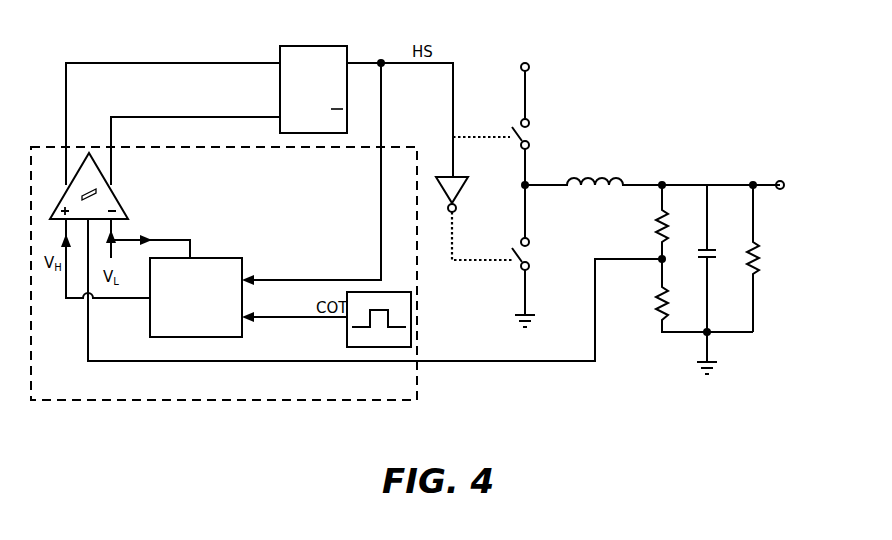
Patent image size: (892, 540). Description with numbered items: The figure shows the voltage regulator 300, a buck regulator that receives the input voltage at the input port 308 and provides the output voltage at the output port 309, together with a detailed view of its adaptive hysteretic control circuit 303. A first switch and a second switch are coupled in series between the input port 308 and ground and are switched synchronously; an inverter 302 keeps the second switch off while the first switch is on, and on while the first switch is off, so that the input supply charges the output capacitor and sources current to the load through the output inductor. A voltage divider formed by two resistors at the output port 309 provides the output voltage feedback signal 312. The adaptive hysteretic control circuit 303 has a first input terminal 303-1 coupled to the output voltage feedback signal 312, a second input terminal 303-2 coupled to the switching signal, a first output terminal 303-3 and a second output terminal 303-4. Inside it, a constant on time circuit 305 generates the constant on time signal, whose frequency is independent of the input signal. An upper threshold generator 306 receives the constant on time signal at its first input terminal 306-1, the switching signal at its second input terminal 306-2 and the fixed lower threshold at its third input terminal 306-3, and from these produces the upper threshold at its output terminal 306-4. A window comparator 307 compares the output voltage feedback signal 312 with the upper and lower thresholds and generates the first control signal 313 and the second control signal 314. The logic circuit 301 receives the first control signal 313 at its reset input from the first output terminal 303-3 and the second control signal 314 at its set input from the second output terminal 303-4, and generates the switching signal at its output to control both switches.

The voltage regulator 300 is at (668, 84).
The logic circuit 301 is at (288, 46).
The inverter 302 is at (462, 194).
The adaptive hysteretic control circuit 303 is at (370, 400).
The first input terminal 303-1 is at (275, 290).
The second input terminal 303-2 is at (334, 174).
The first output terminal 303-3 is at (195, 151).
The second output terminal 303-4 is at (153, 124).
The constant on time circuit 305 is at (383, 292).
The upper threshold generator 306 is at (216, 258).
The first input terminal 306-1 is at (294, 310).
The second input terminal 306-2 is at (319, 271).
The third input terminal 306-3 is at (151, 239).
The output terminal 306-4 is at (105, 259).
The window comparator 307 is at (118, 203).
The input port 308 is at (522, 62).
The output port 309 is at (776, 180).
The output voltage feedback signal 312 is at (480, 361).
The first control signal 313 is at (205, 118).
The second control signal 314 is at (216, 63).